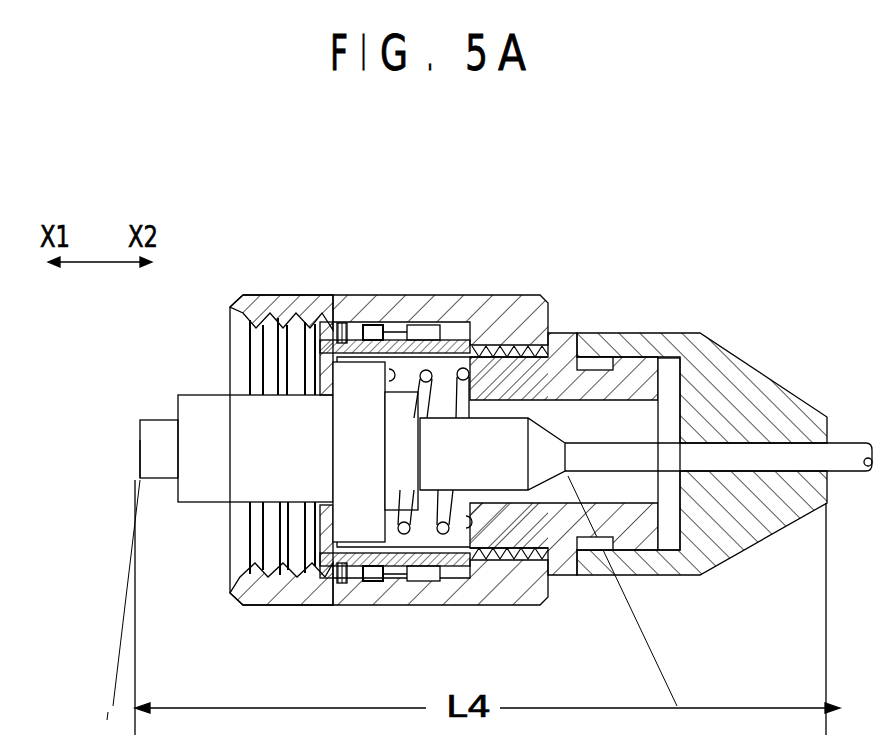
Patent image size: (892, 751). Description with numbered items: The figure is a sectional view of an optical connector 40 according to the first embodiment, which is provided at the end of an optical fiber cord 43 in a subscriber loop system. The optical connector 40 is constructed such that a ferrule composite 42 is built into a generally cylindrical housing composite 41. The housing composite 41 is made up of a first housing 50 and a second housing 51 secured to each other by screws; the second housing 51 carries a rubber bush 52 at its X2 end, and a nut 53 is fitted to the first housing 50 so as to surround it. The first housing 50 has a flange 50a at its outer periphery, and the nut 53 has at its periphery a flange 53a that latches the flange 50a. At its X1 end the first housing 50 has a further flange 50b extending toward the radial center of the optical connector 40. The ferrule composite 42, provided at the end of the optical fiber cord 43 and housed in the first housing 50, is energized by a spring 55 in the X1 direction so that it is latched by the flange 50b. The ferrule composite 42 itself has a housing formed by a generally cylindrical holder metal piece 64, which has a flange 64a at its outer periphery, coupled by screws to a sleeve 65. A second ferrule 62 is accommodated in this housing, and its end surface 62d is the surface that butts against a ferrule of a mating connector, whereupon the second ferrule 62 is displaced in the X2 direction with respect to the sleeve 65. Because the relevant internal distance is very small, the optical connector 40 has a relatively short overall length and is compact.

The optical connector 40 is at (672, 155).
The housing composite 41 is at (572, 321).
The ferrule composite 42 is at (210, 394).
The optical fiber cord 43 is at (848, 467).
The first housing 50 is at (463, 340).
The flange 50a is at (392, 330).
The flange 50b is at (345, 390).
The second housing 51 is at (608, 383).
The rubber bush 52 is at (782, 387).
The nut 53 is at (346, 340).
The flange 53a is at (395, 325).
The spring 55 is at (428, 372).
The second ferrule 62 is at (162, 420).
The end surface 62d is at (140, 448).
The holder metal piece 64 is at (450, 600).
The flange 64a is at (371, 548).
The sleeve 65 is at (222, 487).